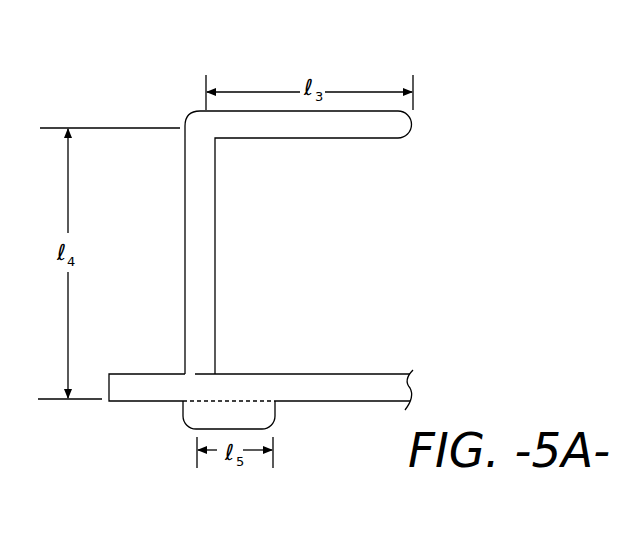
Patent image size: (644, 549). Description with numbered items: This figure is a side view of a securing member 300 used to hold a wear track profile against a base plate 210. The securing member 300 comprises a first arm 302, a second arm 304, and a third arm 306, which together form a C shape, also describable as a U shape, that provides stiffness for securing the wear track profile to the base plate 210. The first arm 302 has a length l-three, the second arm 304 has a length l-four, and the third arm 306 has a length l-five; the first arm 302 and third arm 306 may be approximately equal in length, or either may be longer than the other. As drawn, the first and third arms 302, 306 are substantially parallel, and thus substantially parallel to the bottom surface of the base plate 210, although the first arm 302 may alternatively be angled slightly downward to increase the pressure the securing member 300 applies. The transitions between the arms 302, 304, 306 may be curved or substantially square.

The securing member 300 is at (158, 68).
The first arm 302 is at (323, 130).
The second arm 304 is at (205, 258).
The third arm 306 is at (238, 415).
The base plate 210 is at (312, 388).